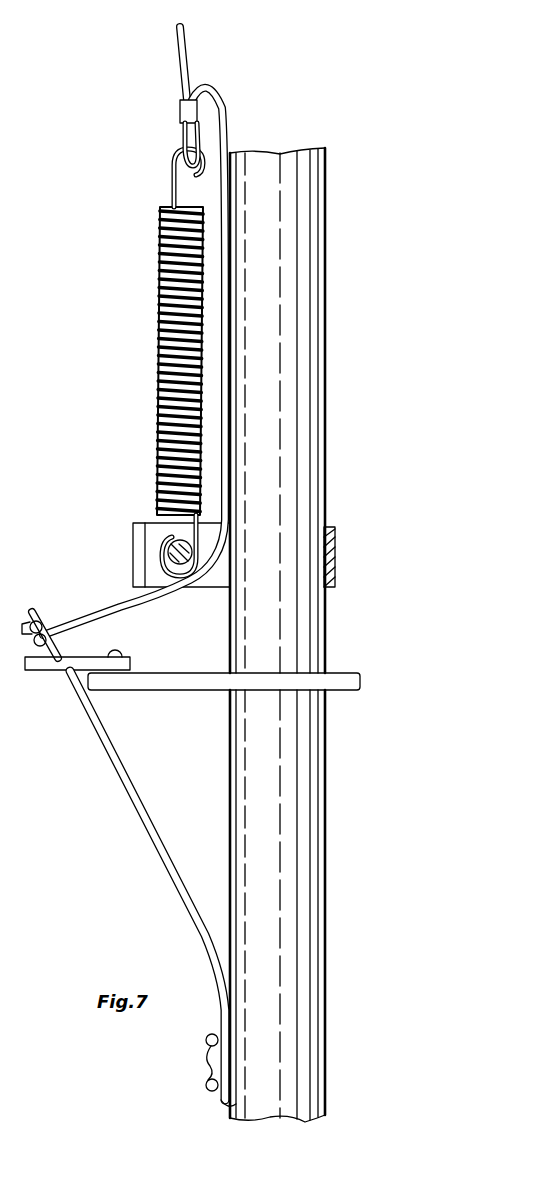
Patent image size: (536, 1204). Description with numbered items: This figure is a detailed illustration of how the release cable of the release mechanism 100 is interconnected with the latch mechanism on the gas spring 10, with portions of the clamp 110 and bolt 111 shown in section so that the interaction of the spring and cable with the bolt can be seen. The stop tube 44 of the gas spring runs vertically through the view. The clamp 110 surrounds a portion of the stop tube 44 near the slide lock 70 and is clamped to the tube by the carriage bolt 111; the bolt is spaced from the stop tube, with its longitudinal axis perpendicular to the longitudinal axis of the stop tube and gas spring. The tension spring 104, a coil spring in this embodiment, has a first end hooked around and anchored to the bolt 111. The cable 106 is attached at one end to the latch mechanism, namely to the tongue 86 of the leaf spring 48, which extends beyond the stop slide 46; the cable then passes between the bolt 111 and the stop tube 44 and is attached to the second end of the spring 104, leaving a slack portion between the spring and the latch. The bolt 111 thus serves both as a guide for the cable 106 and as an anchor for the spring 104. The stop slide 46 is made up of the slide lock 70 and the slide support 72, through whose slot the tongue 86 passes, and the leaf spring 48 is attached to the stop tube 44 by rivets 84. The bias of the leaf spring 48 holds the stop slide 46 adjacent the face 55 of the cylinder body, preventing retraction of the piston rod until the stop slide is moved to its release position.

The gas spring 10 is at (330, 430).
The stop tube 44 is at (319, 305).
The stop slide 46 is at (30, 680).
The leaf spring 48 is at (133, 793).
The face 55 is at (226, 663).
The slide lock 70 is at (345, 673).
The slide support 72 is at (112, 652).
The rivets 84 is at (205, 1044).
The tongue 86 is at (36, 611).
The release mechanism 100 is at (144, 276).
The tension spring 104 is at (158, 338).
The cable 106 is at (192, 54).
The clamp 110 is at (337, 560).
The carriage bolt 111 is at (162, 552).